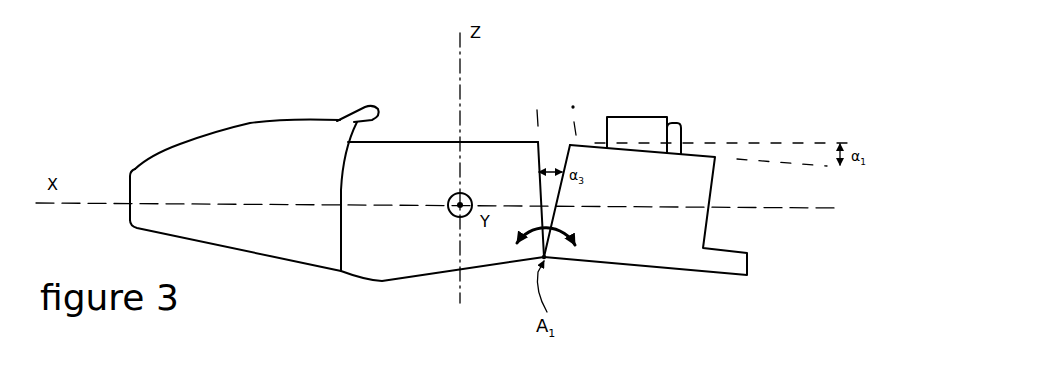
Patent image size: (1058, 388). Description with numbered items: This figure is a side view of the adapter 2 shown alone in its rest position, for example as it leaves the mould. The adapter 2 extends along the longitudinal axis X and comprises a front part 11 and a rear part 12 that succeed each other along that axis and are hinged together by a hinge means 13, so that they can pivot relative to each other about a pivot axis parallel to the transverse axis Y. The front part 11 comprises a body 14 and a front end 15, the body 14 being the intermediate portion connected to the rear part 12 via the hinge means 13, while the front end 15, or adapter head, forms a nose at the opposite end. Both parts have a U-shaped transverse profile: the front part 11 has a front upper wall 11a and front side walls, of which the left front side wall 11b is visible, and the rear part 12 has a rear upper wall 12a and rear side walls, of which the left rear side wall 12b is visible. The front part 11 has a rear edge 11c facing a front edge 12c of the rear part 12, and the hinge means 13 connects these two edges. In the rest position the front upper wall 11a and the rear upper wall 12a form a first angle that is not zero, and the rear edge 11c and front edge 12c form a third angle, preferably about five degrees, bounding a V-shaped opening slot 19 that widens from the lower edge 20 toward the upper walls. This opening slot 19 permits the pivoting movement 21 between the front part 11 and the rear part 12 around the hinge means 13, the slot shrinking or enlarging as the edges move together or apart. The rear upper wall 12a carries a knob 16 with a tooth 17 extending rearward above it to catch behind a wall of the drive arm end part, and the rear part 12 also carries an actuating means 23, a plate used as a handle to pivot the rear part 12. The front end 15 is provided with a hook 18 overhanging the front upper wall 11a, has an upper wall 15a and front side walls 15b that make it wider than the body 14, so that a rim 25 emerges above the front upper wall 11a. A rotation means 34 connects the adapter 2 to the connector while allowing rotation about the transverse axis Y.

The adapter 2 is at (111, 101).
The front part 11 is at (411, 101).
The front upper wall 11a is at (428, 142).
The left front side wall 11b is at (441, 207).
The rear edge 11c is at (538, 222).
The rear part 12 is at (659, 69).
The rear upper wall 12a is at (680, 146).
The left rear side wall 12b is at (658, 210).
The front edge 12c is at (557, 213).
The hinge means 13 is at (548, 258).
The body 14 is at (495, 160).
The front end 15 is at (240, 140).
The upper wall of the front end 15a is at (288, 118).
The front side wall of the front end 15b is at (235, 193).
The knob 16 is at (628, 126).
The tooth 17 is at (678, 124).
The hook 18 is at (368, 107).
The opening slot 19 is at (552, 148).
The lower edge 20 is at (473, 272).
The pivoting movement 21 is at (552, 257).
The actuating means 23 is at (738, 248).
The rim 25 is at (341, 227).
The rotation means 34 is at (453, 215).